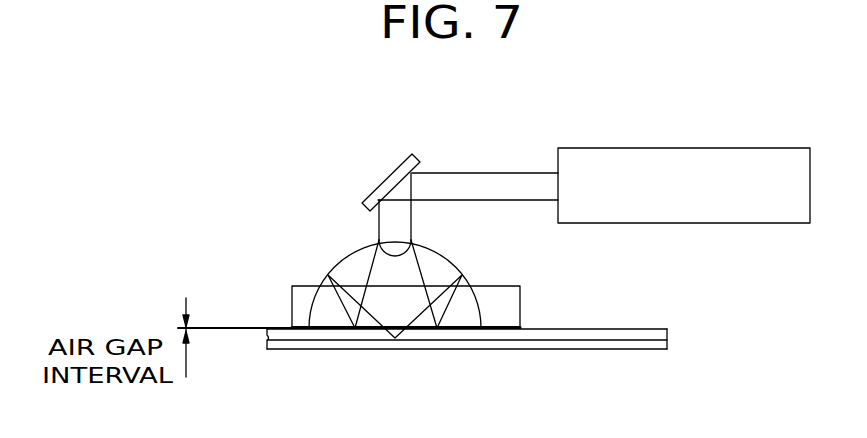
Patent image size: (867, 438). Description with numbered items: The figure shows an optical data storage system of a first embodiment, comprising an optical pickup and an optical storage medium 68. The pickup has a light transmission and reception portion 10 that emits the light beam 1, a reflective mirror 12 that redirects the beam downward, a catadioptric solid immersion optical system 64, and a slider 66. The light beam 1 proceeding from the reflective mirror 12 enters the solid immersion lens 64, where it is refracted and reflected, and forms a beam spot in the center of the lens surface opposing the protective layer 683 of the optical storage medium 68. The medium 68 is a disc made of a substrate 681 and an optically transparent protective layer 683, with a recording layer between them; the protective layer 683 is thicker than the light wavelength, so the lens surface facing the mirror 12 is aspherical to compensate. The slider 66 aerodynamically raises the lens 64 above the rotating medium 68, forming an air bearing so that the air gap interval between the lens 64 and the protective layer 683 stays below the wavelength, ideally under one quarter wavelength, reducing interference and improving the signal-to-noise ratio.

The light beam 1 is at (498, 173).
The light transmission and reception portion 10 is at (620, 148).
The reflective mirror 12 is at (393, 173).
The catadioptric solid immersion optical system 64 is at (457, 266).
The slider 66 is at (293, 286).
The optical storage medium 68 is at (504, 329).
The substrate 681 is at (667, 343).
The protective layer 683 is at (612, 334).